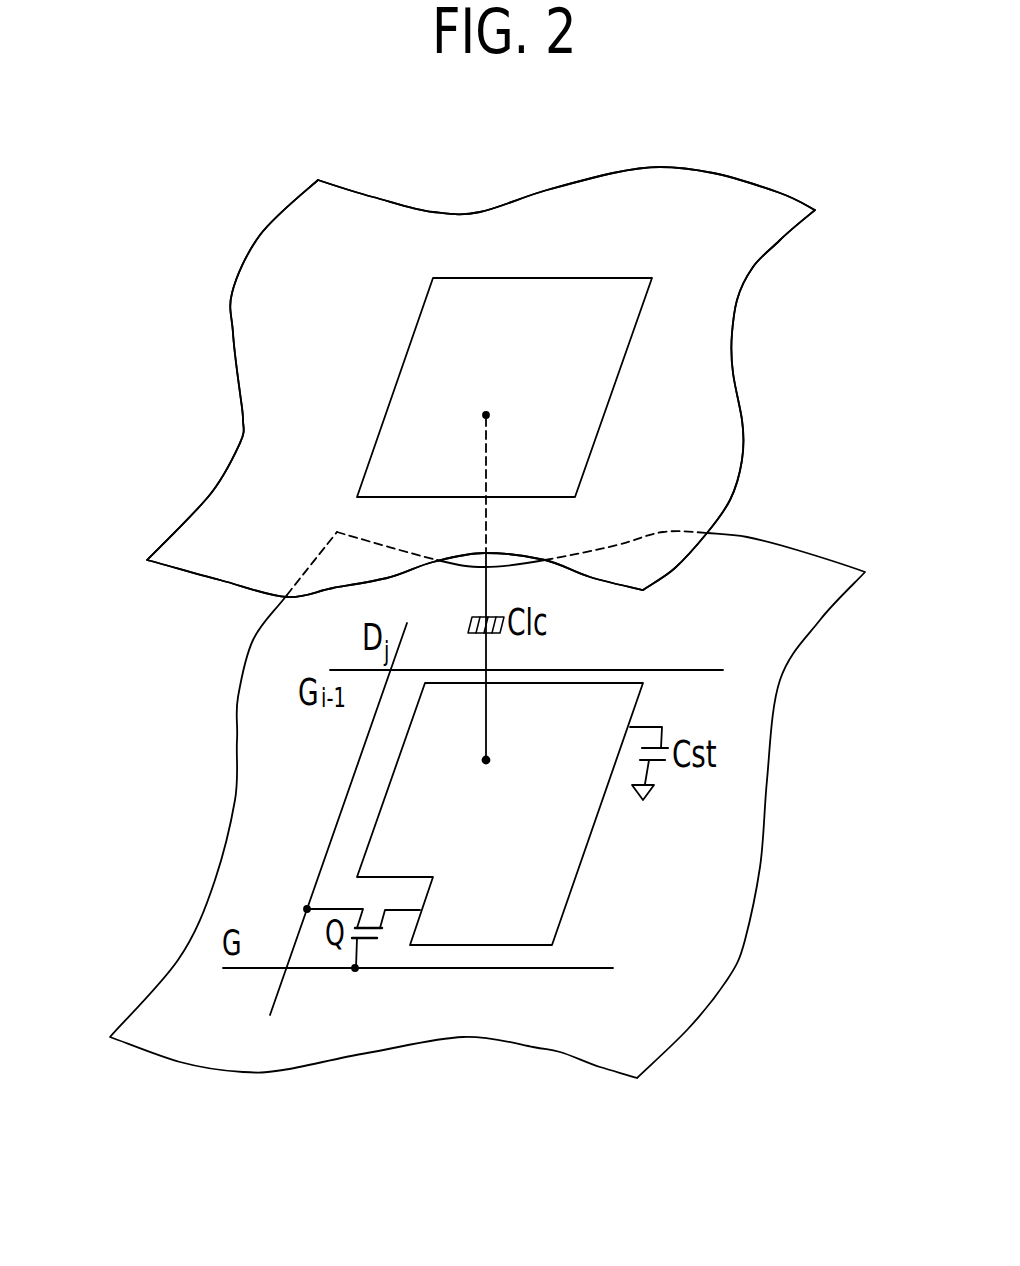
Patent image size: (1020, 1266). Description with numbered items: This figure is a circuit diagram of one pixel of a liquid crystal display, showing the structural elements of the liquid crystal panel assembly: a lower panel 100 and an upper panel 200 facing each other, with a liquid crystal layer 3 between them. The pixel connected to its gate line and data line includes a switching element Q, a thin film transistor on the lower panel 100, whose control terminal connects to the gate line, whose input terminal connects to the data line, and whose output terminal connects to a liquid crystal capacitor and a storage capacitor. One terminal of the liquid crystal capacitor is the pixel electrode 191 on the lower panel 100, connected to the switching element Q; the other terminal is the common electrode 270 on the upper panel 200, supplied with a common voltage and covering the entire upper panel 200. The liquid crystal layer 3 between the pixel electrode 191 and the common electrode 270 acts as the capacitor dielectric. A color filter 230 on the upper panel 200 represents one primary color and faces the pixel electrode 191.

The upper panel 200 is at (740, 415).
The common electrode 270 is at (733, 350).
The color filter 230 is at (608, 403).
The lower panel 100 is at (765, 777).
The pixel electrode 191 is at (578, 872).
The liquid crystal layer 3 is at (147, 685).